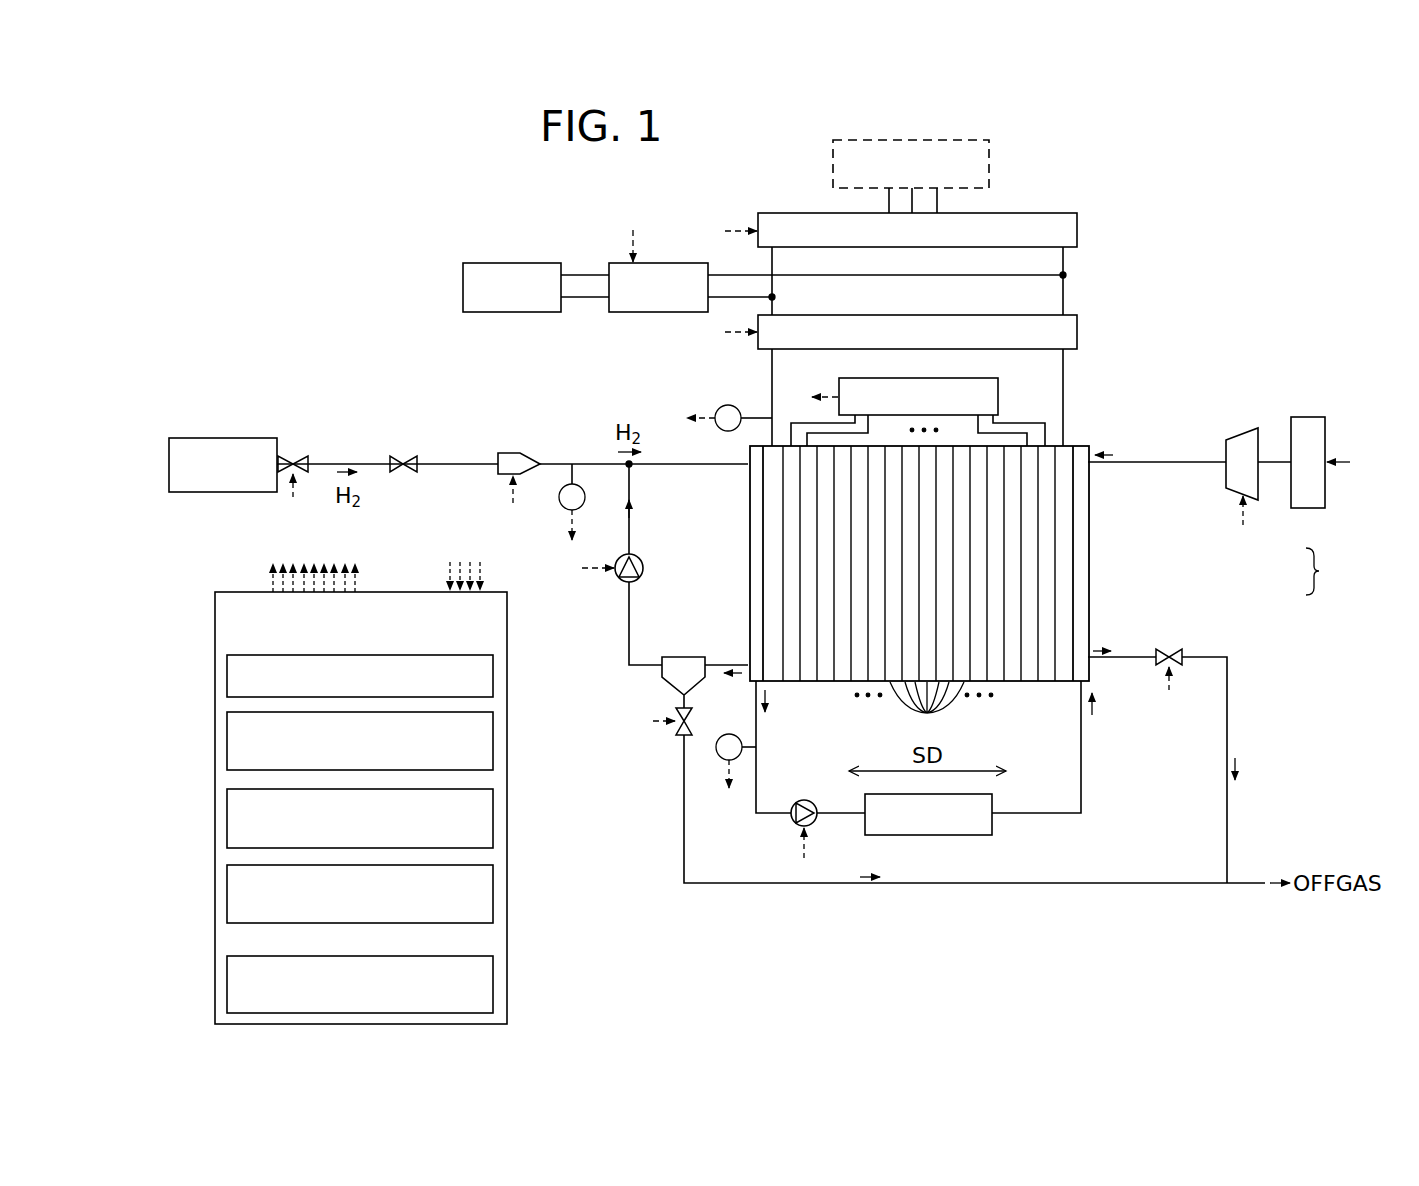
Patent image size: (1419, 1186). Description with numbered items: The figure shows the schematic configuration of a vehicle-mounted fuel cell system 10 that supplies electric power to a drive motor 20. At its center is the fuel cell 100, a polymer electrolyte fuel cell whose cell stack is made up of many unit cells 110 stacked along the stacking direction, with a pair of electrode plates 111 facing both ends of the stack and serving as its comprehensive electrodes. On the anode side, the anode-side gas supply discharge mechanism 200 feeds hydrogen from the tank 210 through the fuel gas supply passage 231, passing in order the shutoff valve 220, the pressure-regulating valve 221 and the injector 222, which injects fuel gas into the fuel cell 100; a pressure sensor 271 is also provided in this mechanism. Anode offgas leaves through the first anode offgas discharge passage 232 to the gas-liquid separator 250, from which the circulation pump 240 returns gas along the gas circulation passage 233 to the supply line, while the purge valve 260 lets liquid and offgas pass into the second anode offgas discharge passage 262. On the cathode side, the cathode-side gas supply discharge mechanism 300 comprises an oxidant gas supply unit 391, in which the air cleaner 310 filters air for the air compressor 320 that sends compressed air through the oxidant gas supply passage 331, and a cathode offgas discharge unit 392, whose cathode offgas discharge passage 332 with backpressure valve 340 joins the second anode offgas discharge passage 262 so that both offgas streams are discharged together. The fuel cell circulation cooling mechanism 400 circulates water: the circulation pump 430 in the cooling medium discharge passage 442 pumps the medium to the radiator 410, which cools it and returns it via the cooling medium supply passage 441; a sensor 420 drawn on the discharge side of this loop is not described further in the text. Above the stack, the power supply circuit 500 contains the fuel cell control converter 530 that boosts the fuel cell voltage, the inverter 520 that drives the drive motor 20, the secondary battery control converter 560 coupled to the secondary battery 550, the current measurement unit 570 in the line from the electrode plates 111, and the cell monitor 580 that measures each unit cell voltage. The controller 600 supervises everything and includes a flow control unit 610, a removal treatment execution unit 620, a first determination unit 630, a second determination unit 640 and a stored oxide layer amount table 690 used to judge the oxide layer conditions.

The fuel cell system 10 is at (288, 188).
The drive motor 20 is at (989, 162).
The fuel cell 100 is at (1104, 576).
The unit cells 110 is at (919, 594).
The electrode plates 111 is at (773, 682).
The anode-side gas supply discharge mechanism 200 is at (234, 318).
The tank 210 is at (195, 438).
The shutoff valve 220 is at (285, 455).
The pressure-regulating valve 221 is at (395, 455).
The injector 222 is at (522, 435).
The fuel gas supply passage 231 is at (660, 463).
The first anode offgas discharge passage 232 is at (717, 660).
The gas circulation passage 233 is at (629, 630).
The circulation pump 240 is at (640, 558).
The gas-liquid separator 250 is at (685, 657).
The purge valve 260 is at (678, 732).
The second anode offgas discharge passage 262 is at (684, 832).
The pressure sensor 271 is at (558, 507).
The cathode-side gas supply discharge mechanism 300 is at (1337, 571).
The air cleaner 310 is at (1312, 416).
The air compressor 320 is at (1230, 438).
The oxidant gas supply passage 331 is at (1138, 462).
The cathode offgas discharge passage 332 is at (1128, 660).
The backpressure valve 340 is at (1177, 650).
The oxidant gas supply unit 391 is at (1214, 537).
The cathode offgas discharge unit 392 is at (1214, 608).
The fuel cell circulation cooling mechanism 400 is at (1111, 794).
The radiator 410 is at (913, 835).
The temperature sensor 420 is at (729, 734).
The circulation pump 430 is at (804, 800).
The cooling medium supply passage 441 is at (1020, 813).
The cooling medium discharge passage 442 is at (756, 792).
The power supply circuit 500 is at (1160, 195).
The inverter 520 is at (1077, 227).
The fuel cell control converter 530 is at (1077, 330).
The secondary battery 550 is at (478, 263).
The secondary battery control converter 560 is at (653, 263).
The current measurement unit 570 is at (717, 410).
The cell monitor 580 is at (998, 400).
The controller 600 is at (507, 620).
The flow control unit 610 is at (227, 677).
The removal treatment execution unit 620 is at (227, 742).
The first determination unit 630 is at (227, 820).
The second determination unit 640 is at (227, 895).
The oxide layer amount table 690 is at (227, 988).